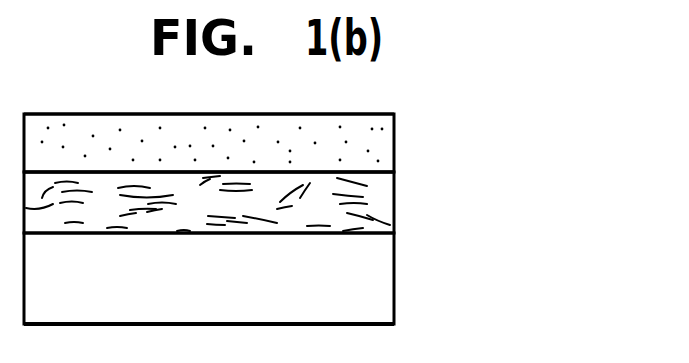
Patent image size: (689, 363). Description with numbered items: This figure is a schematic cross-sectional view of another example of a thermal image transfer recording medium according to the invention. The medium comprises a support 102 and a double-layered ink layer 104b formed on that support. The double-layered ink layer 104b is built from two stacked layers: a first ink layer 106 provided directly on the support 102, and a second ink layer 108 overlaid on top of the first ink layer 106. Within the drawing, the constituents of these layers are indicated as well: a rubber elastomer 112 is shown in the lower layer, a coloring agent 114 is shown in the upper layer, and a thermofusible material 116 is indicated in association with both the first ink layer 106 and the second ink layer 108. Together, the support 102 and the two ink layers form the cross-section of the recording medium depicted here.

The support 102 is at (402, 234).
The double-layered ink layer 104b is at (340, 163).
The first ink layer 106 is at (291, 203).
The second ink layer 108 is at (290, 131).
The rubber elastomer 112 is at (383, 221).
The coloring agent 114 is at (380, 147).
The thermofusible material 116 is at (382, 114).